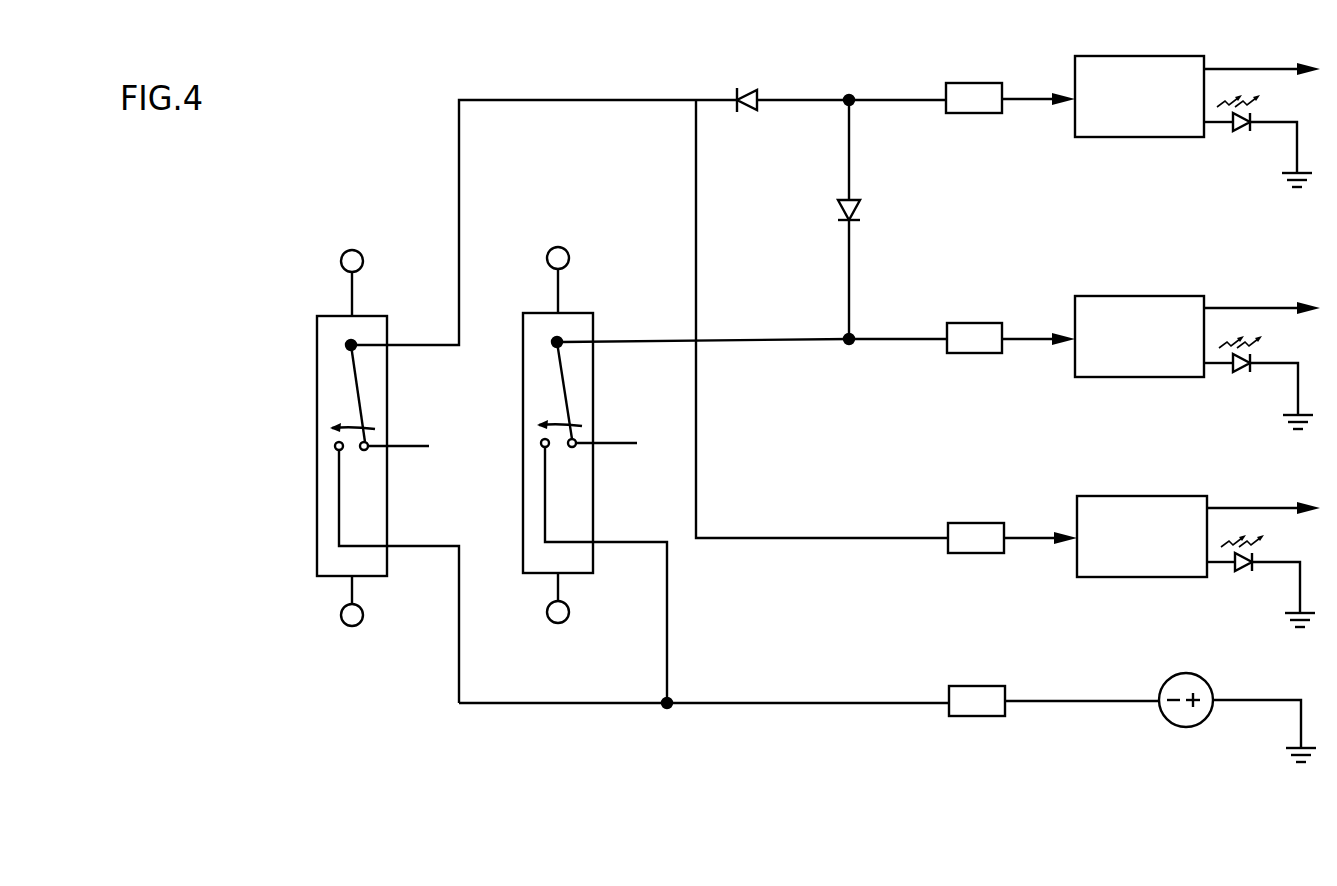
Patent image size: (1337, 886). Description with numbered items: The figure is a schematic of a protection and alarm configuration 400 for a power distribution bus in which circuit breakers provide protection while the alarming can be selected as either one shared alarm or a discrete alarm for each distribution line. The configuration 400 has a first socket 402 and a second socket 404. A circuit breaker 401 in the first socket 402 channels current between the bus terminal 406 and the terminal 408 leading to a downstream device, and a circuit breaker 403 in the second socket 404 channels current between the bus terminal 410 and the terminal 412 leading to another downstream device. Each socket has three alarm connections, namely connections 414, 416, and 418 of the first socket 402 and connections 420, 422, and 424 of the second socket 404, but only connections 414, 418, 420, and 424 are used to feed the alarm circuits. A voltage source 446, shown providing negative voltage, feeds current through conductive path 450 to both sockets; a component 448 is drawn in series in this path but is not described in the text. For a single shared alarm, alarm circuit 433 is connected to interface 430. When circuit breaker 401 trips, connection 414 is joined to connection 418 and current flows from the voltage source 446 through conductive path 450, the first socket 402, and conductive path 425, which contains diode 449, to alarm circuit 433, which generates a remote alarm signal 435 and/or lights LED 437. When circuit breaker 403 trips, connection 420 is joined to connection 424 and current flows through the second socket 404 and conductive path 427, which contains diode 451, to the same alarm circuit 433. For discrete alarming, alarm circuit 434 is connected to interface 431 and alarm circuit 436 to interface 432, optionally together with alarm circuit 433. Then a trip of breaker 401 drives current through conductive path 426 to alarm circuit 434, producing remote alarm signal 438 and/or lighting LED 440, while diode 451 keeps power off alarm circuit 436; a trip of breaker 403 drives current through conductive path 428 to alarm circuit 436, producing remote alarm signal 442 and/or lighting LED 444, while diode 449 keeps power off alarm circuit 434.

The protection and alarm configuration 400 is at (860, 738).
The circuit breaker 401 is at (342, 370).
The first socket 402 is at (317, 508).
The circuit breaker 403 is at (548, 360).
The second socket 404 is at (523, 505).
The bus terminal 406 is at (356, 246).
The terminal 408 is at (362, 621).
The bus terminal 410 is at (570, 255).
The terminal 412 is at (568, 616).
The alarm connection 414 is at (399, 340).
The alarm connection 416 is at (408, 445).
The alarm connection 418 is at (408, 544).
The alarm connection 420 is at (607, 338).
The alarm connection 422 is at (613, 441).
The alarm connection 424 is at (613, 542).
The conductive path 425 is at (813, 97).
The conductive path 426 is at (698, 212).
The conductive path 427 is at (852, 147).
The conductive path 428 is at (898, 340).
The interface 430 is at (975, 83).
The interface 431 is at (977, 523).
The interface 432 is at (977, 322).
The alarm circuit 433 is at (1156, 55).
The alarm circuit 434 is at (1158, 495).
The remote alarm signal 435 is at (1247, 68).
The alarm circuit 436 is at (1158, 295).
The LED 437 is at (1242, 140).
The remote alarm signal 438 is at (1250, 507).
The LED 440 is at (1245, 580).
The remote alarm signal 442 is at (1248, 308).
The LED 444 is at (1243, 378).
The voltage source 446 is at (1170, 727).
The resistor 448 is at (980, 685).
The diode 449 is at (757, 80).
The conductive path 450 is at (733, 700).
The diode 451 is at (868, 195).